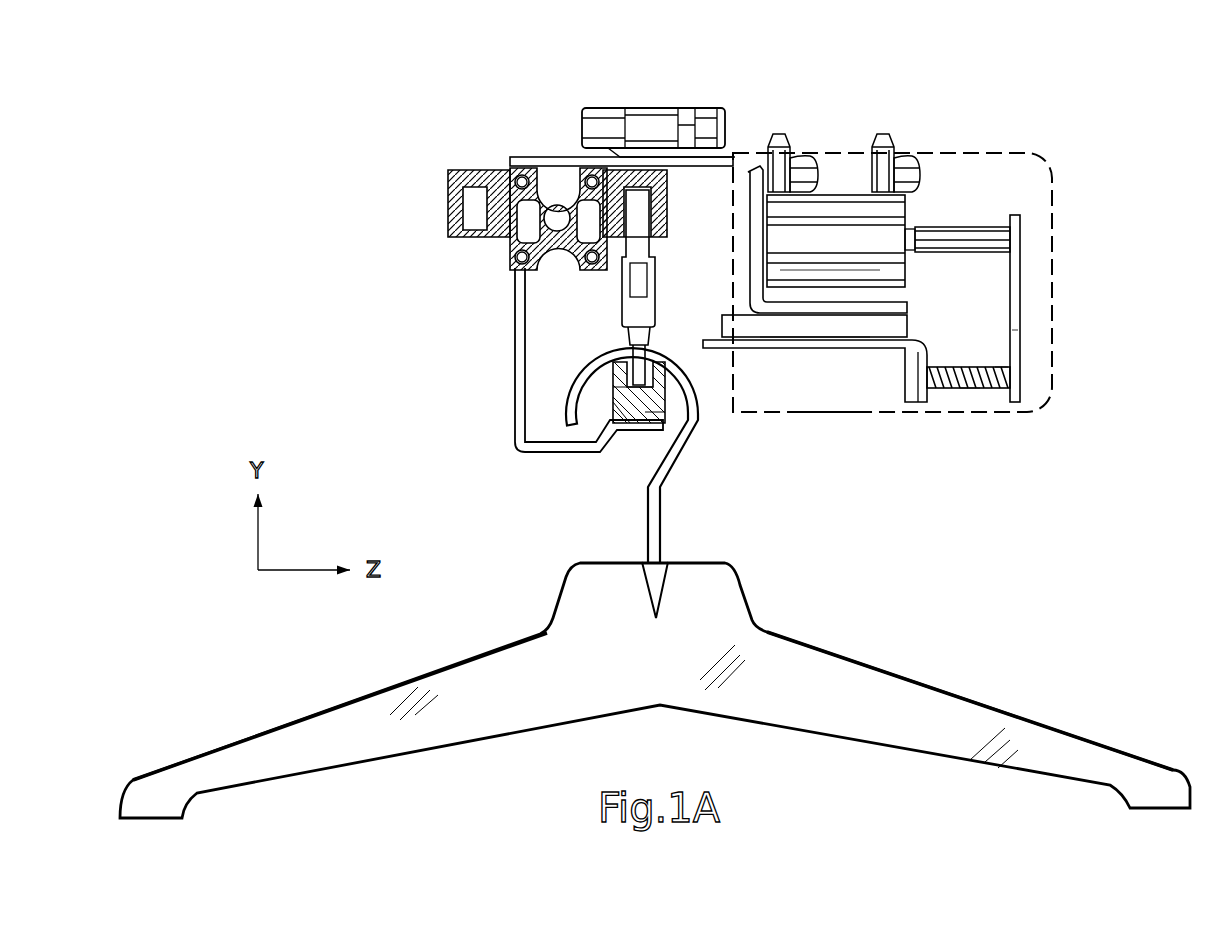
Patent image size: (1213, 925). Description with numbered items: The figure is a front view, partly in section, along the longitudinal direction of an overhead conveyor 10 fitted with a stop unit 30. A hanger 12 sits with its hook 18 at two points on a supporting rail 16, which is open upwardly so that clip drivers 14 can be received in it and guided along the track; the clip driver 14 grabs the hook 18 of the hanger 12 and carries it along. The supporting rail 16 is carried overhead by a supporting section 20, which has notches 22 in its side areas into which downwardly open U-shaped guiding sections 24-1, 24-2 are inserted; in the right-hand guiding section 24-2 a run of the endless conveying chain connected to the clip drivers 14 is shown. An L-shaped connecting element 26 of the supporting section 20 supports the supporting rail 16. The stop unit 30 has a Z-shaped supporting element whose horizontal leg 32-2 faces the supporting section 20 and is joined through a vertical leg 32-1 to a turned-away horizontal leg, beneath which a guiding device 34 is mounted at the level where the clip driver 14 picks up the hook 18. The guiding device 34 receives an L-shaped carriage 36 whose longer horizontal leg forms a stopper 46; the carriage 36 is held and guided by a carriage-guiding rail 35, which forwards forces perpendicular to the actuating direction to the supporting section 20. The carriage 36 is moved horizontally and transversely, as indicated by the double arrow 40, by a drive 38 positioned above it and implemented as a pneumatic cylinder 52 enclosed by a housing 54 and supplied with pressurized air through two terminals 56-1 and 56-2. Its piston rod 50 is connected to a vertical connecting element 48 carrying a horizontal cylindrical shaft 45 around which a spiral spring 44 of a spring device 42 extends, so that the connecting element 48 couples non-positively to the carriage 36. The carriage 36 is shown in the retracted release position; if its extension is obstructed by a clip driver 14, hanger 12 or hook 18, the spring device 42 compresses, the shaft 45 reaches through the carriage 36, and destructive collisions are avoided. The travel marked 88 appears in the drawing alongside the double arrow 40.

The overhead conveyor 10 is at (275, 287).
The hanger 12 is at (280, 688).
The clip driver 14 is at (598, 292).
The supporting rail 16 is at (613, 402).
The hook 18 is at (648, 508).
The supporting section 20 is at (508, 261).
The notch 22 is at (553, 188).
The guiding section 24-1 is at (448, 208).
The guiding section 24-2 is at (664, 198).
The connecting element 26 is at (518, 448).
The stop unit 30 is at (1000, 152).
The vertical leg 32-1 is at (750, 268).
The horizontal leg 32-2 is at (516, 156).
The guiding device 34 is at (912, 318).
The carriage-guiding rail 35 is at (842, 329).
The carriage 36 is at (1024, 258).
The drive 38 is at (840, 142).
The double arrow 40 is at (828, 413).
The spring device 42 is at (968, 394).
The spiral spring 44 is at (938, 395).
The shaft 45 is at (1000, 392).
The stopper 46 is at (760, 349).
The connecting element 48 is at (1020, 338).
The piston rod 50 is at (958, 226).
The cylinder 52 is at (850, 196).
The housing 54 is at (906, 268).
The terminal 56-1 is at (805, 158).
The terminal 56-2 is at (905, 158).
The travel distance 88 is at (783, 380).